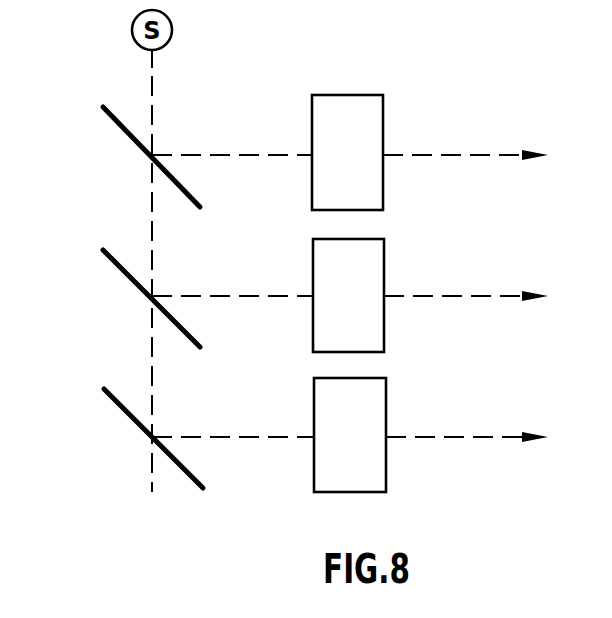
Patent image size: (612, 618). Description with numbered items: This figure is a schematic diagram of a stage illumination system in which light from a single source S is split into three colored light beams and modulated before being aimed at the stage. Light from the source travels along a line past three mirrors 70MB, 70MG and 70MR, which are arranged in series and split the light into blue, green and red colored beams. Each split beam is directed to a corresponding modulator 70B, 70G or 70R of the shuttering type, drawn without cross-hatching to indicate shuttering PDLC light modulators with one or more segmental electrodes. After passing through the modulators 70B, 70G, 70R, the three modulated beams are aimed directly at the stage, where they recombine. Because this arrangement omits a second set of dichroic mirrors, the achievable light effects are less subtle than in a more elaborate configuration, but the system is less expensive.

The mirror 70MB is at (133, 152).
The mirror 70MG is at (137, 297).
The mirror 70MR is at (132, 427).
The modulator 70B is at (298, 140).
The modulator 70G is at (310, 281).
The modulator 70R is at (305, 420).